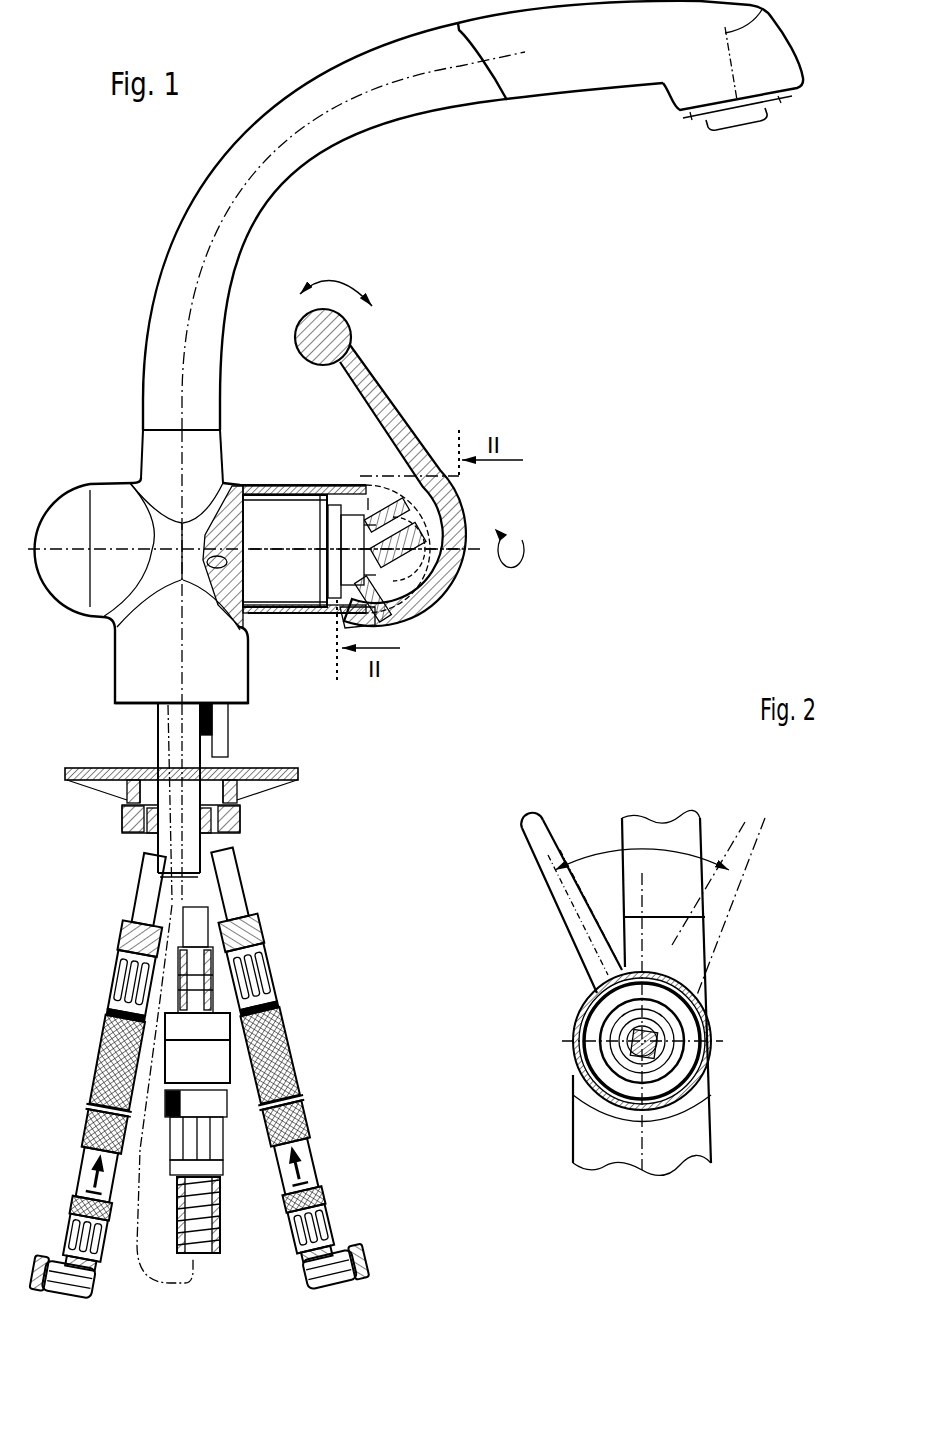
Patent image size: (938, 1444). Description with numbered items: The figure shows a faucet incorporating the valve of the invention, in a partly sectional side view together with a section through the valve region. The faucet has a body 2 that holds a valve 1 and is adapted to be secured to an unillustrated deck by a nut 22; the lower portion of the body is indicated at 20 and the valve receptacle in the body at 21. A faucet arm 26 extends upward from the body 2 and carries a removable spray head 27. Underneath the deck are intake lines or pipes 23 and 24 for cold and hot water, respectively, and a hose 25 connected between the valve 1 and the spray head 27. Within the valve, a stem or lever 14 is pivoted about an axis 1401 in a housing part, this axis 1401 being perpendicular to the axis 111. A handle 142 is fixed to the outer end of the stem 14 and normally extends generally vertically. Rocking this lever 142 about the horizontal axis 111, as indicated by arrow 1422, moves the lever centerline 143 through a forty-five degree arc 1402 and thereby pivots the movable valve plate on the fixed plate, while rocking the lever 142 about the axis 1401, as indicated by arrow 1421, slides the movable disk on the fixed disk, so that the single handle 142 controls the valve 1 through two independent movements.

In FIG. 1, the valve 1 is at (282, 522).
In FIG. 2, the valve 1 is at (687, 1035).
In FIG. 1, the body 2 is at (270, 697).
In FIG. 2, the body 2 is at (697, 1135).
In FIG. 1, the stem or lever 14 is at (387, 513).
In FIG. 2, the stem or lever 14 is at (632, 1058).
In FIG. 1, the housing base 20 is at (117, 705).
In FIG. 1, the cartridge receptacle 21 is at (317, 485).
In FIG. 2, the cartridge receptacle 21 is at (702, 1072).
In FIG. 1, the nut 22 is at (283, 800).
In FIG. 1, the intake line for cold water 23 is at (315, 1158).
In FIG. 1, the intake line for hot water 24 is at (92, 1166).
In FIG. 1, the hose 25 is at (217, 1213).
In FIG. 1, the faucet arm 26 is at (353, 127).
In FIG. 2, the faucet arm 26 is at (695, 843).
In FIG. 1, the spray head 27 is at (573, 72).
In FIG. 1, the axis 111 is at (488, 547).
In FIG. 1, the handle 142 is at (377, 380).
In FIG. 2, the handle 142 is at (555, 897).
In FIG. 2, the lever centerline 143 is at (520, 820).
In FIG. 1, the axis 1401 is at (325, 562).
In FIG. 2, the arc 1402 is at (603, 855).
In FIG. 1, the arrow 1421 is at (347, 287).
In FIG. 1, the arrow 1422 is at (507, 570).